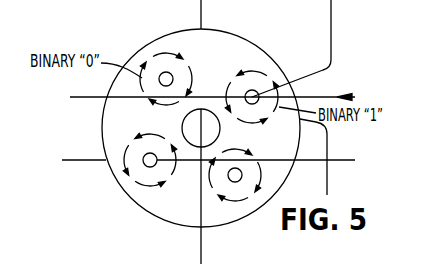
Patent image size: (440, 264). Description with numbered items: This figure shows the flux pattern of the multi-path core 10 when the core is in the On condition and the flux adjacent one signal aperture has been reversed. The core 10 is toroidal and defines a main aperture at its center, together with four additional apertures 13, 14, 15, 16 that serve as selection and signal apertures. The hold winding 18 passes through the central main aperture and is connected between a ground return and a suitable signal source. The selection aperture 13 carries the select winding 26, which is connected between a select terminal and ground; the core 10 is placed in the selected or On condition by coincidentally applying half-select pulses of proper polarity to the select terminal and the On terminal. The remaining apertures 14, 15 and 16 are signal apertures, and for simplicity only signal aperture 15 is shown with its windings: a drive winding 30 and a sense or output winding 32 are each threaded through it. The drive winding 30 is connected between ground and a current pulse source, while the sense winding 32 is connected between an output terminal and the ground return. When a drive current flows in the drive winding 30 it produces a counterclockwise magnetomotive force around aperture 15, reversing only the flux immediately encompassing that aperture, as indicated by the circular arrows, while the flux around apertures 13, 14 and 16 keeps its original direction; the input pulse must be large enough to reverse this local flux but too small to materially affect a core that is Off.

The core 10 is at (238, 40).
The selection aperture 13 is at (153, 164).
The signal aperture 14 is at (172, 76).
The signal aperture 15 is at (246, 94).
The signal aperture 16 is at (242, 174).
The hold winding 18 is at (203, 242).
The select winding 26 is at (99, 160).
The drive winding 30 is at (321, 97).
The sense winding 32 is at (331, 58).